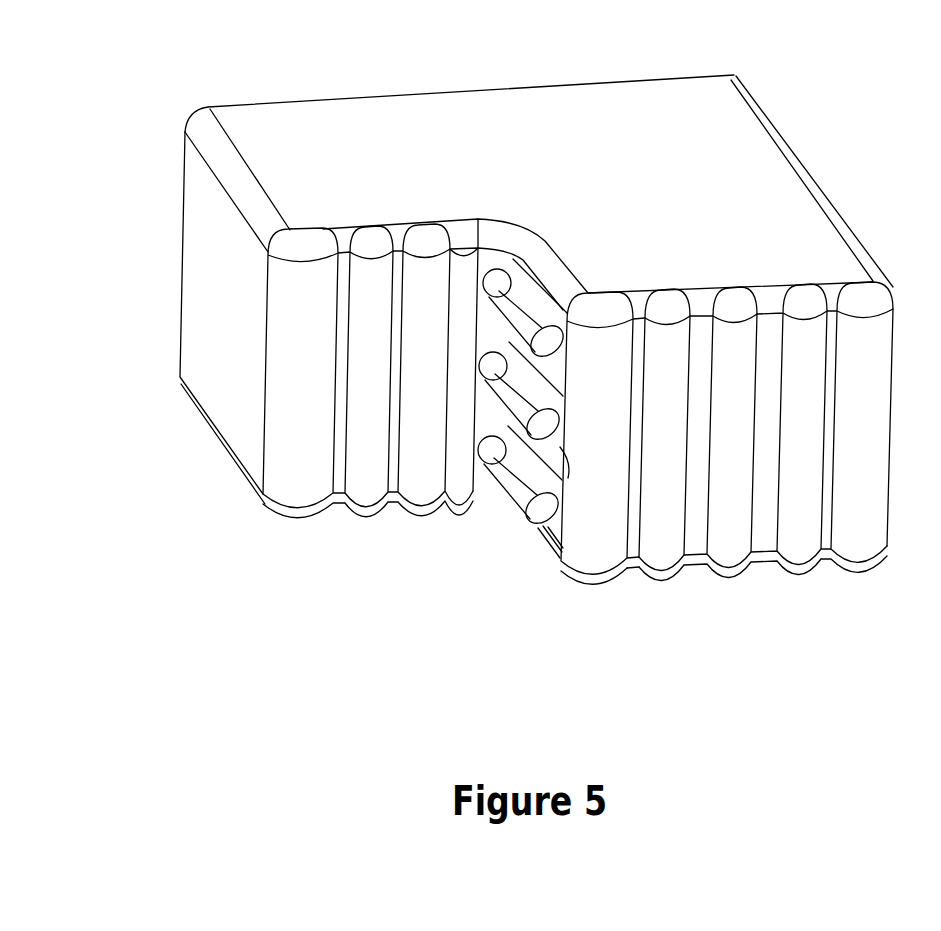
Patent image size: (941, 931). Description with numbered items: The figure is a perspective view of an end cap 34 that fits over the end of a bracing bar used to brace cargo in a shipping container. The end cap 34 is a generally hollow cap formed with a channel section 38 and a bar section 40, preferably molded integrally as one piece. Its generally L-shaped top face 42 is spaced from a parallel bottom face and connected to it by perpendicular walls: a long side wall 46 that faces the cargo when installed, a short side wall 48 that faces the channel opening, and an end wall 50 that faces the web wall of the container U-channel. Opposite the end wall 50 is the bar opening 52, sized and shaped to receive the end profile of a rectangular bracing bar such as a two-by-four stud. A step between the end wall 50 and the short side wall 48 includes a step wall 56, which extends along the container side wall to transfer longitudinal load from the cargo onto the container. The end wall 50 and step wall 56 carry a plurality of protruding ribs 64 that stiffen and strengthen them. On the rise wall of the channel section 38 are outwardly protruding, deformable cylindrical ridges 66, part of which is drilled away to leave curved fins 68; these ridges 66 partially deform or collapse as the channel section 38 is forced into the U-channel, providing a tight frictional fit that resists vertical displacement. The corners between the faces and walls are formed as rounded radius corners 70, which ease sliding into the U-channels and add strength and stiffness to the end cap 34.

The end cap 34 is at (750, 152).
The channel section 38 is at (718, 256).
The bar section 40 is at (585, 166).
The top face 42 is at (271, 118).
The long side wall 46 is at (826, 196).
The short side wall 48 is at (240, 425).
The end wall 50 is at (699, 300).
The bar opening 52 is at (537, 85).
The step wall 56 is at (397, 233).
The ribs 64 is at (383, 273).
The deformable ridges 66 is at (553, 488).
The curved fins 68 is at (523, 483).
The rounded radius corners 70 is at (880, 408).